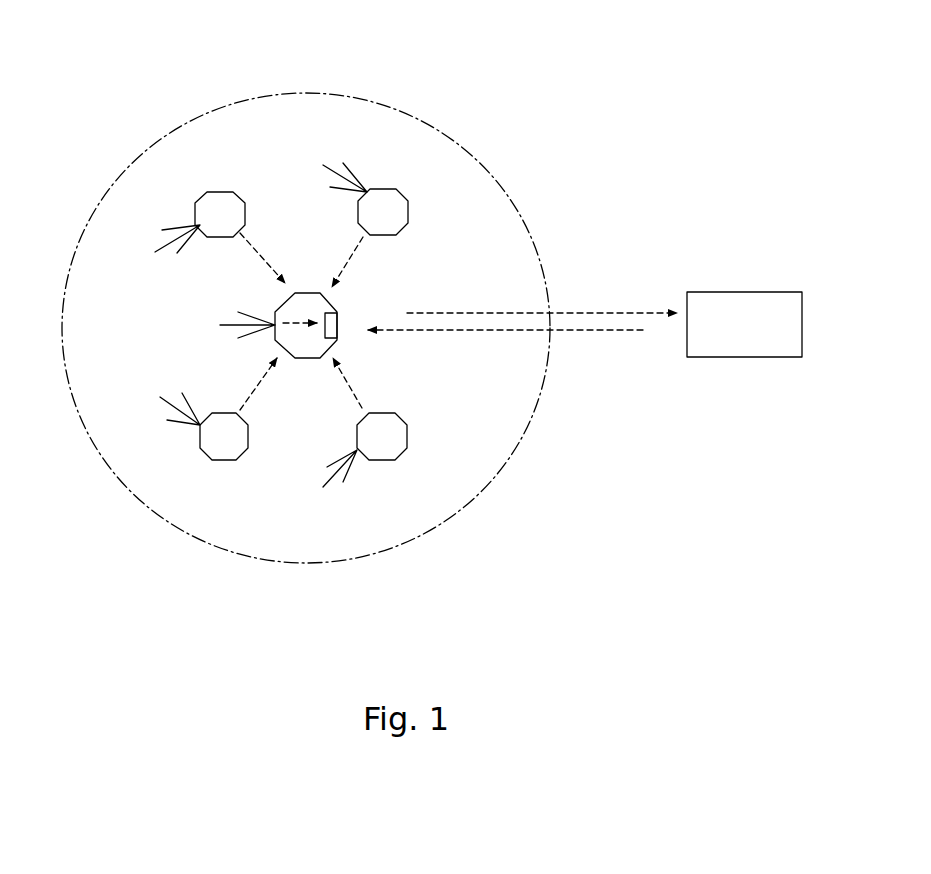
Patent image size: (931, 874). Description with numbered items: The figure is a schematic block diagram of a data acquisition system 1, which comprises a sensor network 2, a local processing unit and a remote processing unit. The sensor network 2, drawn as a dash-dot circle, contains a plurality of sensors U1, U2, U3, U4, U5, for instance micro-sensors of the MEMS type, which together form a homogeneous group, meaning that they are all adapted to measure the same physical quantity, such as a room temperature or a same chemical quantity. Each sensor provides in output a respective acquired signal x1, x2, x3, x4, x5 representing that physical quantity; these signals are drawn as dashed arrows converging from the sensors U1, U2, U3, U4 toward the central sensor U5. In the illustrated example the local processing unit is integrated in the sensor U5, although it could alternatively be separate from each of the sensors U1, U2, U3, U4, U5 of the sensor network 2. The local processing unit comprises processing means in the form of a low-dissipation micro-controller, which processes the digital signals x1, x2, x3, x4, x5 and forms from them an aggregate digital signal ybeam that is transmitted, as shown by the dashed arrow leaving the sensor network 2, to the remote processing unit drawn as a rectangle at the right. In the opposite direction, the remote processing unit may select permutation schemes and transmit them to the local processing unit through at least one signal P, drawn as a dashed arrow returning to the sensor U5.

The data acquisition system 1 is at (106, 61).
The sensor network 2 is at (92, 440).
The sensor U1 is at (377, 189).
The sensor U2 is at (222, 192).
The sensor U3 is at (228, 460).
The sensor U4 is at (382, 460).
The sensor U5 is at (310, 358).
The acquired signal x1 is at (352, 252).
The acquired signal x2 is at (252, 250).
The acquired signal x3 is at (250, 400).
The acquired signal x4 is at (353, 393).
The acquired signal x5 is at (293, 320).
The aggregate digital signal ybeam is at (430, 313).
The signal P is at (633, 330).